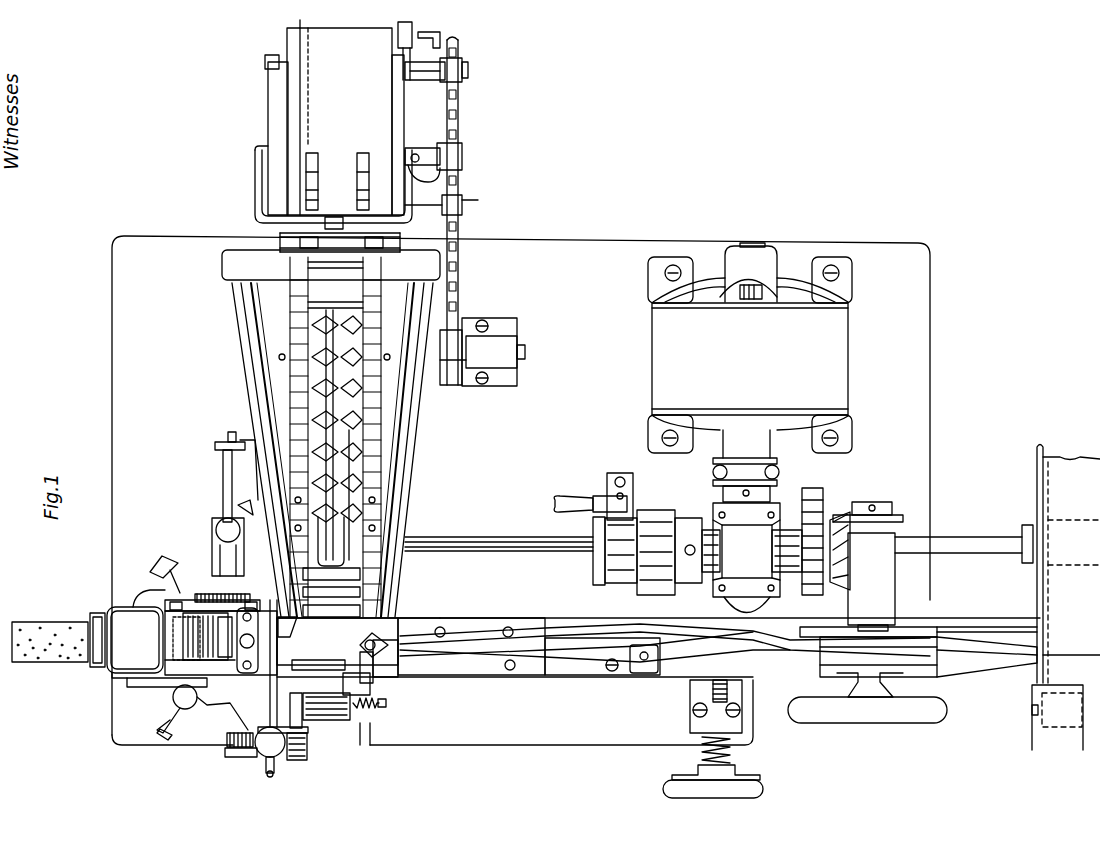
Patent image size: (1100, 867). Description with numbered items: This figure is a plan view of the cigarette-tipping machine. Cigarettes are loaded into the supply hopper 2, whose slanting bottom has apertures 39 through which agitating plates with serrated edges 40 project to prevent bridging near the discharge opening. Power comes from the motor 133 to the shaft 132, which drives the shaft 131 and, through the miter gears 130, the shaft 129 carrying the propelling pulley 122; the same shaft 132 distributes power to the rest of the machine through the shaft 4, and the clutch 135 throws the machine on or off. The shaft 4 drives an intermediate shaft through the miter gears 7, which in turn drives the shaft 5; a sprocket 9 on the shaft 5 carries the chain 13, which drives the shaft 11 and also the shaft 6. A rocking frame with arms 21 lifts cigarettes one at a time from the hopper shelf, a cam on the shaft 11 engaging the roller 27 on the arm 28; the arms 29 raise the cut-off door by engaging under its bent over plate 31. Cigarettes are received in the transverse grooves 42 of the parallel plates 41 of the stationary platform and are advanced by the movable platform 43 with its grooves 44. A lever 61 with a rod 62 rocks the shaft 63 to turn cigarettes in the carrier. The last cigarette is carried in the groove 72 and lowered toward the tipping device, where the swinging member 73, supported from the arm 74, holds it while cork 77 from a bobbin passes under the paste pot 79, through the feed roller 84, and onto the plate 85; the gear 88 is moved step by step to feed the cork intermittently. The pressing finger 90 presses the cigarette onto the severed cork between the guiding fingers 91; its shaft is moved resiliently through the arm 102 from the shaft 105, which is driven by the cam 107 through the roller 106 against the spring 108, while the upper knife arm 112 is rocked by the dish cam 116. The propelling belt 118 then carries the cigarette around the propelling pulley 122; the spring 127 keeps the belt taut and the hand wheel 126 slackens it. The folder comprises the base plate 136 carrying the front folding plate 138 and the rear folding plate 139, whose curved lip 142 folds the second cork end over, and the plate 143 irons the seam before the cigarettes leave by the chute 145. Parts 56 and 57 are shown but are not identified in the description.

The supply hopper 2 is at (335, 88).
The shaft 4 is at (512, 537).
The shaft 5 is at (295, 33).
The shaft 6 is at (463, 159).
The miter gears 7 is at (250, 505).
The sprocket 9 is at (448, 385).
The shaft 11 is at (463, 72).
The chain 13 is at (470, 108).
The arms 21 is at (285, 131).
The roller 27 is at (412, 30).
The arm 28 is at (440, 46).
The arms 29 is at (256, 212).
The bent over plate 31 is at (292, 260).
The apertures 39 is at (312, 155).
The serrated edges 40 is at (357, 198).
The parallel plates 41 is at (365, 466).
The transverse grooves 42 is at (362, 452).
The movable platform 43 is at (340, 520).
The grooves 44 is at (365, 488).
The slide 56 is at (400, 224).
The bar 57 is at (380, 264).
The lever 61 is at (222, 490).
The rod 62 is at (222, 530).
The shaft 63 is at (240, 441).
The groove 72 is at (360, 582).
The swinging member 73 is at (384, 645).
The arm 74 is at (362, 610).
The cork 77 is at (62, 624).
The paste pot 79 is at (124, 620).
The feed roller 84 is at (240, 673).
The plate 85 is at (273, 650).
The gear 88 is at (193, 600).
The pressing finger 90 is at (335, 664).
The guiding fingers 91 is at (292, 644).
The arm 102 is at (305, 722).
The shaft 105 is at (384, 710).
The roller 106 is at (256, 732).
The cam 107 is at (228, 746).
The spring 108 is at (368, 712).
The arm 112 is at (300, 752).
The dish cam 116 is at (290, 766).
The propelling belt 118 is at (430, 632).
The propelling pulley 122 is at (920, 674).
The hand wheel 126 is at (668, 786).
The spring 127 is at (728, 758).
The shaft 129 is at (840, 682).
The miter gears 130 is at (852, 508).
The shaft 131 is at (825, 535).
The shaft 132 is at (757, 246).
The motor 133 is at (848, 367).
The clutch 135 is at (628, 504).
The base plate 136 is at (452, 668).
The front folding plate 138 is at (508, 625).
The rear folding plate 139 is at (584, 678).
The curved lip 142 is at (572, 646).
The plate 143 is at (648, 662).
The chute 145 is at (975, 648).